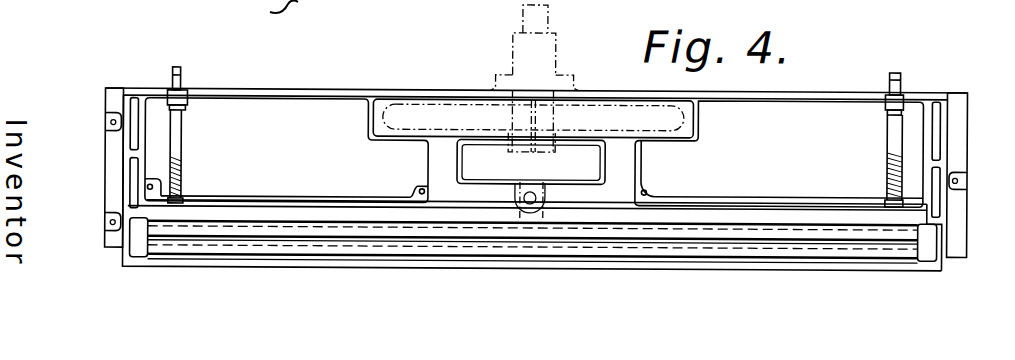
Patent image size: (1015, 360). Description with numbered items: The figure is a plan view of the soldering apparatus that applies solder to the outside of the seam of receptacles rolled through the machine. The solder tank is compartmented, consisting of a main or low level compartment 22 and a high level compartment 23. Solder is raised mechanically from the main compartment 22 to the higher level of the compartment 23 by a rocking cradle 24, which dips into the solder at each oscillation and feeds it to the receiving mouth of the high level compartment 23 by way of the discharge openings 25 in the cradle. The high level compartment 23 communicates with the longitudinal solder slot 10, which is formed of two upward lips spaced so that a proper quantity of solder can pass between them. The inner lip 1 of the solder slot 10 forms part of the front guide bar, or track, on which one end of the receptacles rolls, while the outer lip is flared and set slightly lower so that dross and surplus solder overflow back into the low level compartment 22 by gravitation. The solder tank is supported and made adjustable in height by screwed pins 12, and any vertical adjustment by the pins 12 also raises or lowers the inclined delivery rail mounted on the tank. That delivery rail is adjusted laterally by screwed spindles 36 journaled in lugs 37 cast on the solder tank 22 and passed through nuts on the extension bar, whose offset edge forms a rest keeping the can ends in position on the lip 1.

The inner lip 1 is at (532, 248).
The solder slot 10 is at (478, 242).
The screwed pins 12 is at (108, 223).
The main or low level compartment 22 is at (681, 103).
The high level compartment 23 is at (570, 174).
The rocking cradle 24 is at (442, 109).
The discharge openings 25 is at (542, 154).
The screwed spindles 36 is at (181, 150).
The lugs 37 is at (178, 97).